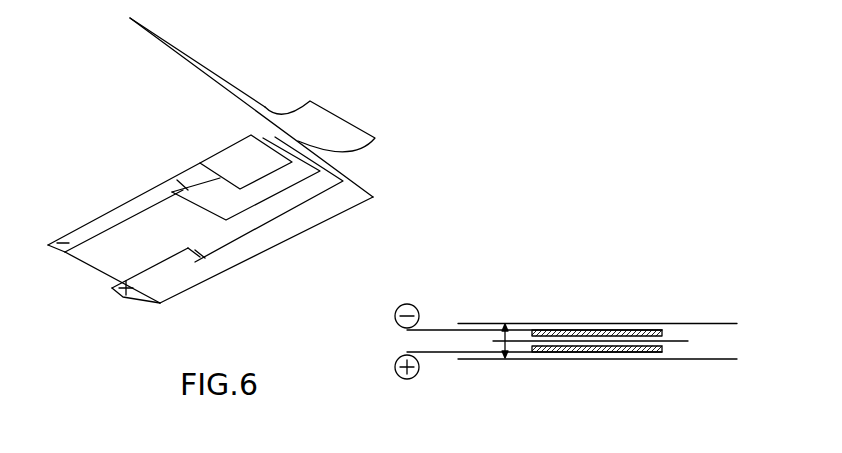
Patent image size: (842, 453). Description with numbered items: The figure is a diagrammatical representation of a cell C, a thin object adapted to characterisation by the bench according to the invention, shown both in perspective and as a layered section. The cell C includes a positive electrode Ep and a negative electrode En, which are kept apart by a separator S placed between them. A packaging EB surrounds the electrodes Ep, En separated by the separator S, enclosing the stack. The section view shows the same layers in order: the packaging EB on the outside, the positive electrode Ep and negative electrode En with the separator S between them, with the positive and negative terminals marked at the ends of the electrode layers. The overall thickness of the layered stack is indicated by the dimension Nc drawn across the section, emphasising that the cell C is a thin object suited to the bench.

The packaging EB is at (355, 143).
The positive electrode Ep is at (241, 152).
The negative electrode En is at (266, 210).
The separator S is at (196, 181).
The cell C is at (207, 292).
The cell thickness / number of layers Nc is at (496, 326).